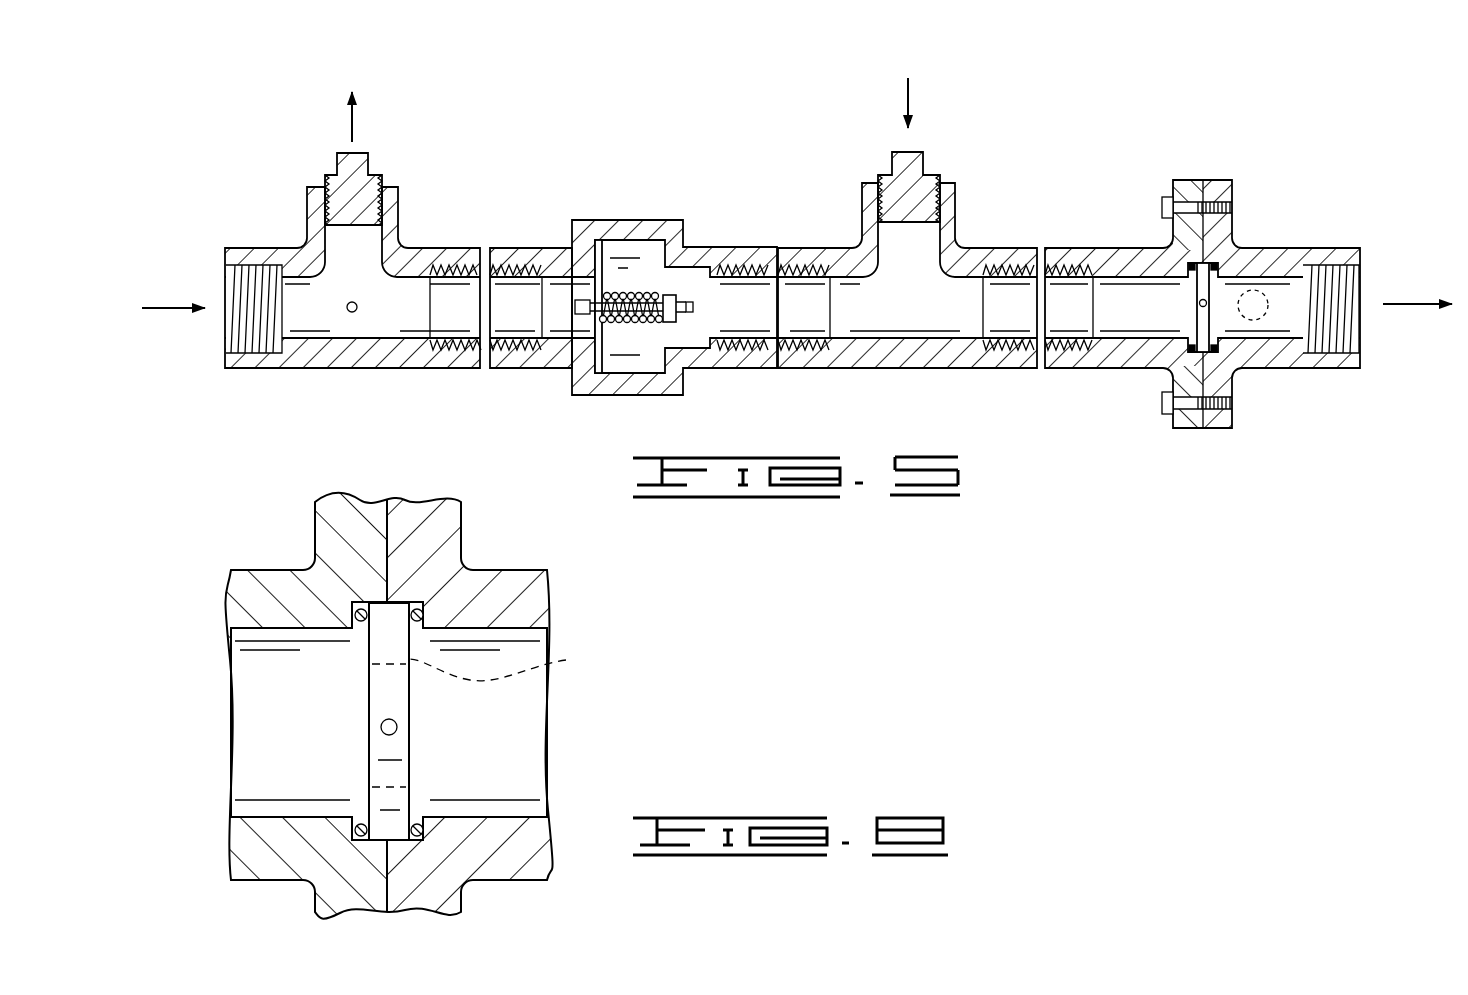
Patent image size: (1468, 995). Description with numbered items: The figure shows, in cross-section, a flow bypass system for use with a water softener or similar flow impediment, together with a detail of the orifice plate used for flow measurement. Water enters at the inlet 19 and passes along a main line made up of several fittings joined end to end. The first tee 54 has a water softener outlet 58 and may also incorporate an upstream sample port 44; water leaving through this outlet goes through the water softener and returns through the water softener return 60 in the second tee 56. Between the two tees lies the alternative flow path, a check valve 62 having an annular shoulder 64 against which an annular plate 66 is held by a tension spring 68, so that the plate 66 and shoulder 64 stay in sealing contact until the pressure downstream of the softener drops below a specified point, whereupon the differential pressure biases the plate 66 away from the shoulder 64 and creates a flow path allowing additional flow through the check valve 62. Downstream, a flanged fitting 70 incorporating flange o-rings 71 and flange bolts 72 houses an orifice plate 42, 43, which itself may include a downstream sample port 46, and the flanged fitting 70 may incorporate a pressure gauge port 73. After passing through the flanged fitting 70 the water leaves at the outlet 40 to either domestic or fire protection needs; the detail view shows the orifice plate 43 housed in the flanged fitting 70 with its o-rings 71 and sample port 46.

In FIG. 5, the inlet flow 19 is at (172, 305).
In FIG. 5, the outlet flow 40 is at (1412, 302).
In FIG. 5, the orifice plate 42 is at (1195, 322).
In FIG. 6, the orifice plate 42 is at (371, 684).
In FIG. 6, the orifice plate 43 is at (492, 712).
In FIG. 5, the upstream sample port 44 is at (357, 311).
In FIG. 5, the downstream sample port 46 is at (1198, 303).
In FIG. 6, the downstream sample port 46 is at (397, 727).
In FIG. 5, the first tee 54 is at (286, 213).
In FIG. 5, the second tee 56 is at (965, 174).
In FIG. 5, the outlet to pressure gauge 58 is at (353, 118).
In FIG. 5, the water softener return 60 is at (908, 92).
In FIG. 5, the check valve 62 is at (636, 209).
In FIG. 5, the annular shoulder 64 is at (590, 260).
In FIG. 5, the annular plate 66 is at (598, 255).
In FIG. 5, the tension spring 68 is at (637, 323).
In FIG. 5, the flanged fitting 70 is at (1239, 170).
In FIG. 6, the flanged fitting 70 is at (282, 536).
In FIG. 5, the flange o-rings 71 is at (1217, 346).
In FIG. 6, the flange o-rings 71 is at (412, 800).
In FIG. 5, the flange bolts 72 is at (1160, 203).
In FIG. 5, the pressure gauge port 73 is at (1270, 262).